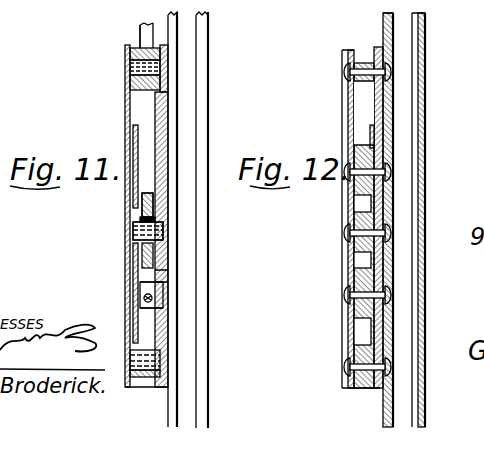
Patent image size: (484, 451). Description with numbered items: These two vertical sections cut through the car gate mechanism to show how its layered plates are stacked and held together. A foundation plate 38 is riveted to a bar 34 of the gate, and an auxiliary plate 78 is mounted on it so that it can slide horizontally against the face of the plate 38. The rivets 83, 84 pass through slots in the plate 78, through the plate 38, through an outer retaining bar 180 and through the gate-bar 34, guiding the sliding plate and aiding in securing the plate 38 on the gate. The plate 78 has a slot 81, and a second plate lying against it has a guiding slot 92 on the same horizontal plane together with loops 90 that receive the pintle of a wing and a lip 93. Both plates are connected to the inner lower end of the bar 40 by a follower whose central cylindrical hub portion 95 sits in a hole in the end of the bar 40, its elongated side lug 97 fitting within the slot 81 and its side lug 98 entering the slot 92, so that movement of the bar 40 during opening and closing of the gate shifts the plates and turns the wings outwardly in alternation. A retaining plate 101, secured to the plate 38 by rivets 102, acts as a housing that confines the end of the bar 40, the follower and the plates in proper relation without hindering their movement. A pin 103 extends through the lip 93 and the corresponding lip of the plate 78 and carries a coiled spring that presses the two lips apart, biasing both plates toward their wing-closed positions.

In FIG. 11, the bar of the gate 34 is at (208, 62).
In FIG. 12, the bar of the gate 34 is at (425, 40).
In FIG. 11, the foundation plate 38 is at (168, 287).
In FIG. 12, the foundation plate 38 is at (378, 103).
In FIG. 11, the bar 40 is at (140, 34).
In FIG. 11, the loops 90 is at (90, 0).
In FIG. 11, the retaining plate 101 is at (127, 100).
In FIG. 11, the rivets 102 is at (148, 72).
In FIG. 11, the central cylindrical hub portion 95 is at (134, 200).
In FIG. 11, the slot 81 is at (157, 213).
In FIG. 11, the guiding slot 92 is at (140, 212).
In FIG. 11, the side lug 97 is at (160, 230).
In FIG. 11, the side lug 98 is at (140, 230).
In FIG. 11, the auxiliary plate 78 is at (160, 258).
In FIG. 12, the auxiliary plate 78 is at (369, 127).
In FIG. 11, the lip 93 is at (147, 287).
In FIG. 11, the pin 103 is at (152, 298).
In FIG. 12, the outer retaining bar 180 is at (345, 103).
In FIG. 12, the rivets 83 is at (343, 173).
In FIG. 12, the rivets 84 is at (343, 234).